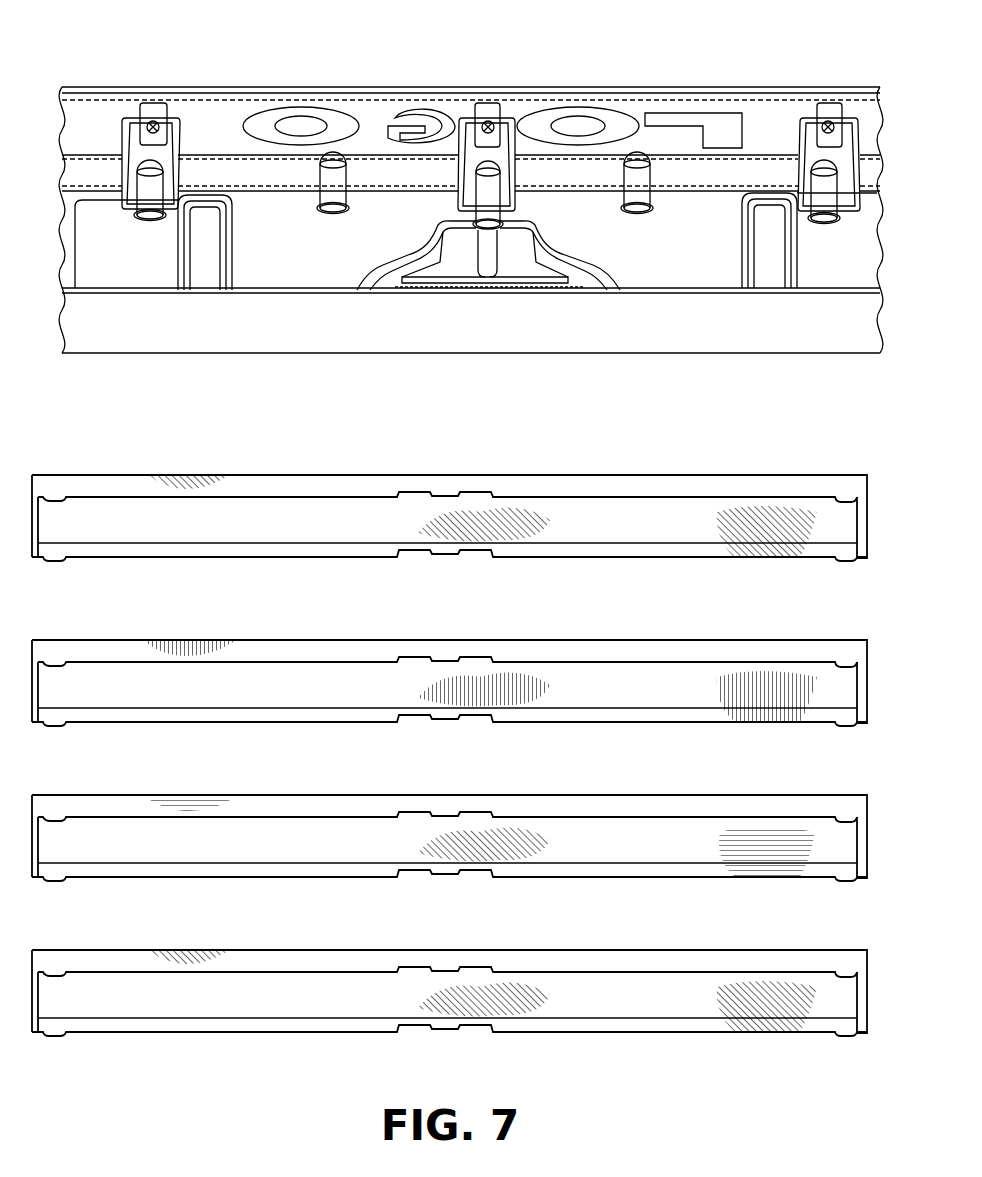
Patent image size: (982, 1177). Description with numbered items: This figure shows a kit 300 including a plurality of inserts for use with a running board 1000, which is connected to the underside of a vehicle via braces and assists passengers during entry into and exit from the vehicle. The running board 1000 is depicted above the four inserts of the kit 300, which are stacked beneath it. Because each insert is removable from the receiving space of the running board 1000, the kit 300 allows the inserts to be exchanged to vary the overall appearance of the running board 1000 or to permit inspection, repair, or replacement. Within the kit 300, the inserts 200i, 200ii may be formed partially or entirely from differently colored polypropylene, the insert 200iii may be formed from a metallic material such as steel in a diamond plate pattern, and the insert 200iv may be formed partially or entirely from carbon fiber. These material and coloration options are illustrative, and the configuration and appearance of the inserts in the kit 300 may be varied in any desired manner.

The running board 1000 is at (895, 155).
The kit 300 is at (880, 432).
The insert 200i is at (126, 524).
The insert 200ii is at (131, 692).
The insert 200iii is at (139, 842).
The insert 200iv is at (136, 1000).